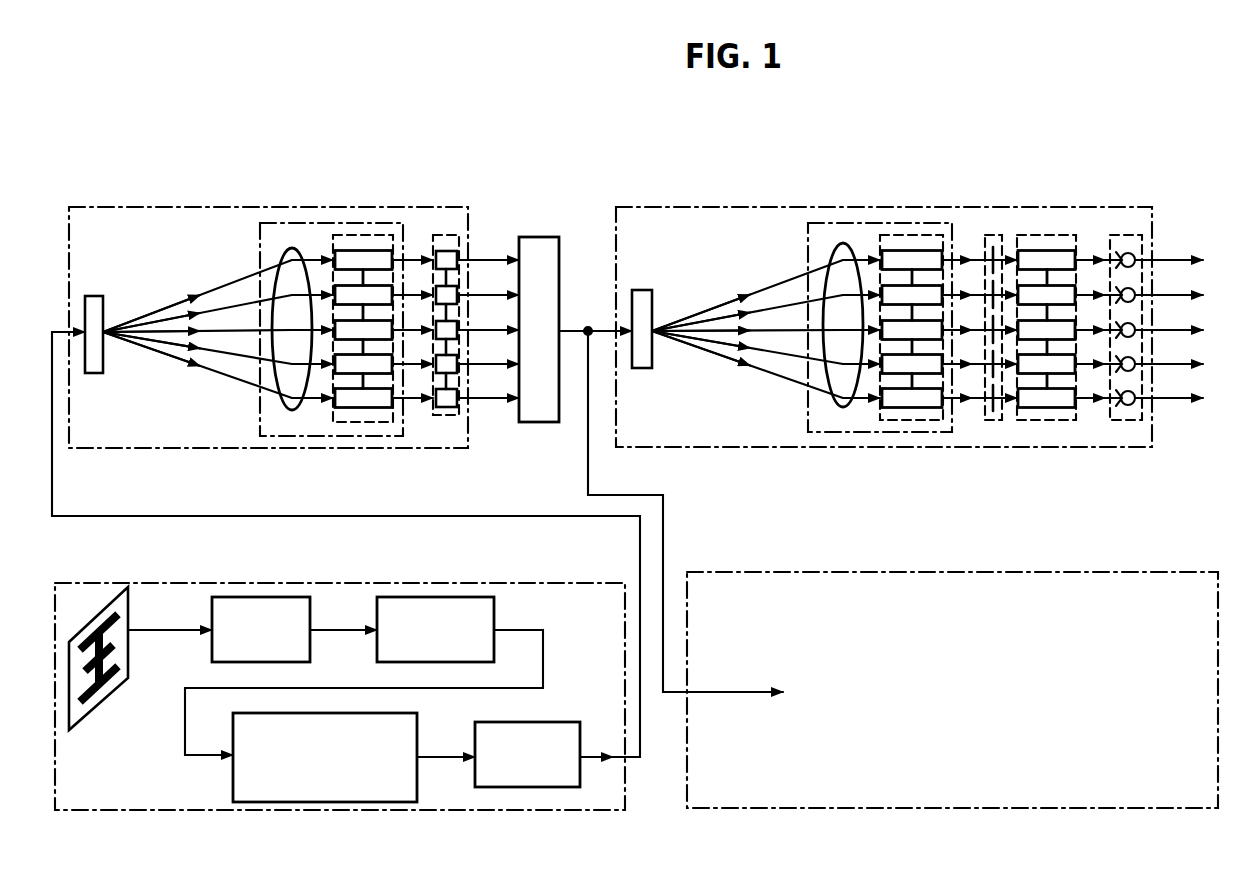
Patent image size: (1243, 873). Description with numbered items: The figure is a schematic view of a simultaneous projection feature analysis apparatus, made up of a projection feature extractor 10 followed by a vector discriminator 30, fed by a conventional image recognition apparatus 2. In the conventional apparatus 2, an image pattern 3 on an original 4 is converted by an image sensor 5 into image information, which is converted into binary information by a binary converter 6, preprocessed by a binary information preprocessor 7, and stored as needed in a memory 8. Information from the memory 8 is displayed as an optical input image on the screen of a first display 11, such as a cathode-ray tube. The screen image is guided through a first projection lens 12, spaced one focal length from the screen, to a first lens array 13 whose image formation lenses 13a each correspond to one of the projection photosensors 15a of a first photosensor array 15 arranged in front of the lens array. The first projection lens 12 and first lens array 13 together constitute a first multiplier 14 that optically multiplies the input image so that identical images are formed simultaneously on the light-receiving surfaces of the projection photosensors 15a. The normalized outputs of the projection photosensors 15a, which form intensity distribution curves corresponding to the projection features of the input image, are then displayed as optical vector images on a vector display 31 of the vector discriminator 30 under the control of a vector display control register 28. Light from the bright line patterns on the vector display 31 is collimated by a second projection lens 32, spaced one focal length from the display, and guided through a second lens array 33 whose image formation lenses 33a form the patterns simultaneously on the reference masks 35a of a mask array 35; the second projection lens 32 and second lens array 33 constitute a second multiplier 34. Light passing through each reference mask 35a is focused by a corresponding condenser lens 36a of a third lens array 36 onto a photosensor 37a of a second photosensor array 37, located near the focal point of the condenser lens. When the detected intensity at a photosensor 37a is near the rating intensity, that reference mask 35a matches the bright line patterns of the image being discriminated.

The conventional image recognition apparatus 2 is at (390, 583).
The image pattern 3 is at (107, 609).
The original 4 is at (117, 683).
The image sensor 5 is at (212, 650).
The binary converter 6 is at (377, 655).
The binary information preprocessor 7 is at (233, 786).
The memory 8 is at (482, 776).
The projection feature extractor 10 is at (165, 207).
The first display 11 is at (92, 296).
The first projection lens 12 is at (292, 248).
The first lens array 13 is at (380, 235).
The image formation lenses 13a is at (348, 400).
The first multiplier 14 is at (345, 236).
The first photosensor array 15 is at (460, 235).
The projection photosensors 15a is at (448, 400).
The vector display control register 28 is at (531, 250).
The vector discriminator 30 is at (1080, 652).
The vector display 31 is at (645, 308).
The second projection lens 32 is at (838, 400).
The second lens array 33 is at (893, 222).
The image formation lenses 33a is at (896, 397).
The second multiplier 34 is at (806, 246).
The mask array 35 is at (988, 237).
The reference masks 35a is at (993, 403).
The third lens array 36 is at (1034, 233).
The condenser lenses 36a is at (1067, 293).
The second photosensor array 37 is at (1148, 233).
The photosensors 37a is at (1138, 404).